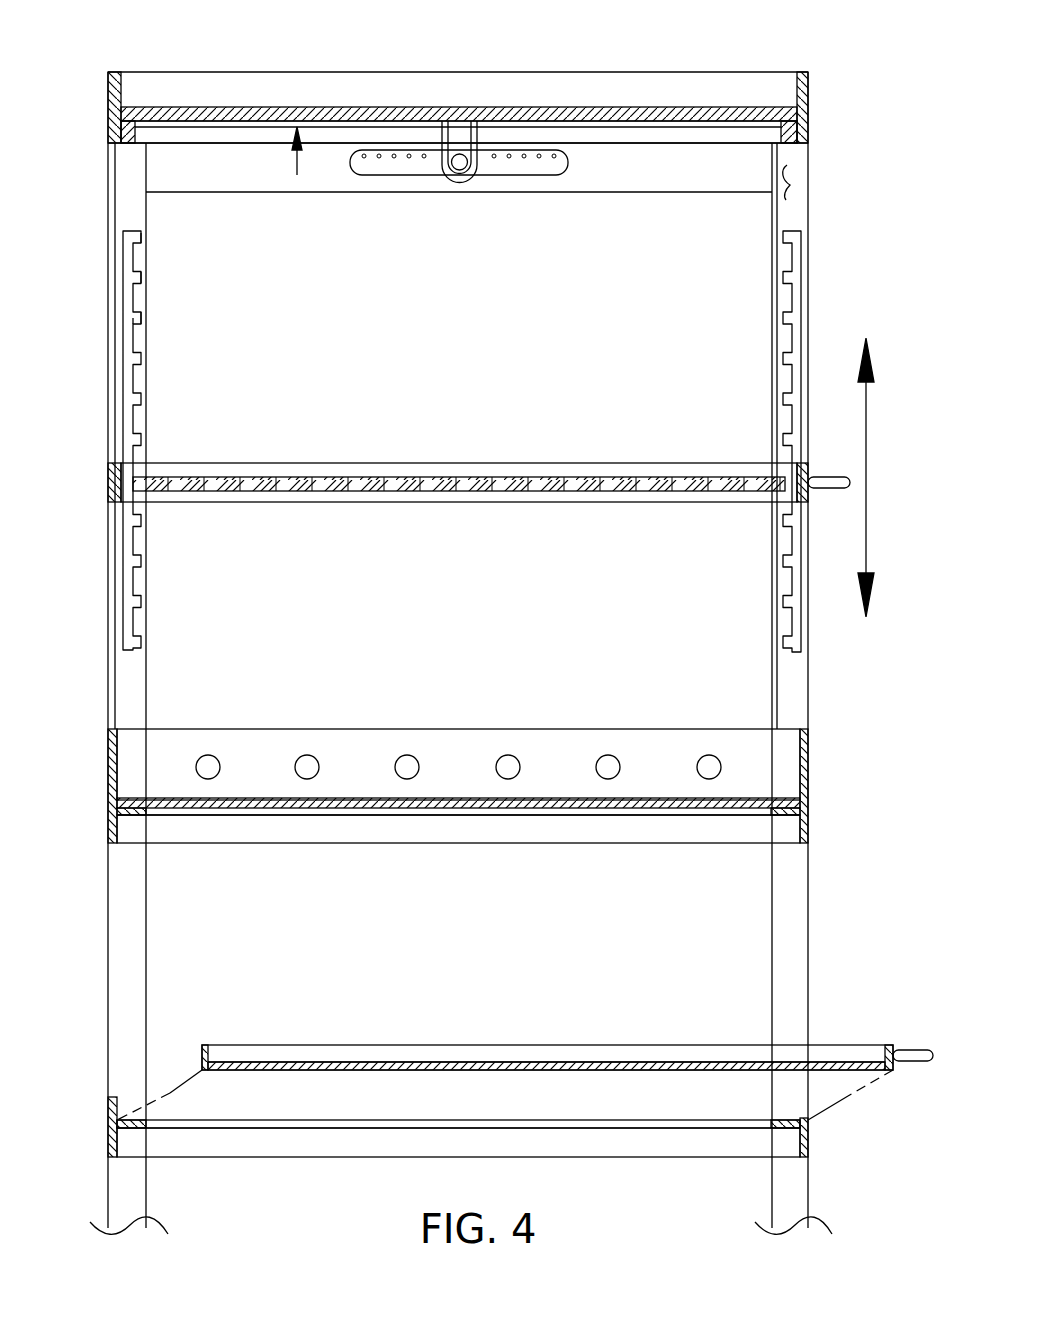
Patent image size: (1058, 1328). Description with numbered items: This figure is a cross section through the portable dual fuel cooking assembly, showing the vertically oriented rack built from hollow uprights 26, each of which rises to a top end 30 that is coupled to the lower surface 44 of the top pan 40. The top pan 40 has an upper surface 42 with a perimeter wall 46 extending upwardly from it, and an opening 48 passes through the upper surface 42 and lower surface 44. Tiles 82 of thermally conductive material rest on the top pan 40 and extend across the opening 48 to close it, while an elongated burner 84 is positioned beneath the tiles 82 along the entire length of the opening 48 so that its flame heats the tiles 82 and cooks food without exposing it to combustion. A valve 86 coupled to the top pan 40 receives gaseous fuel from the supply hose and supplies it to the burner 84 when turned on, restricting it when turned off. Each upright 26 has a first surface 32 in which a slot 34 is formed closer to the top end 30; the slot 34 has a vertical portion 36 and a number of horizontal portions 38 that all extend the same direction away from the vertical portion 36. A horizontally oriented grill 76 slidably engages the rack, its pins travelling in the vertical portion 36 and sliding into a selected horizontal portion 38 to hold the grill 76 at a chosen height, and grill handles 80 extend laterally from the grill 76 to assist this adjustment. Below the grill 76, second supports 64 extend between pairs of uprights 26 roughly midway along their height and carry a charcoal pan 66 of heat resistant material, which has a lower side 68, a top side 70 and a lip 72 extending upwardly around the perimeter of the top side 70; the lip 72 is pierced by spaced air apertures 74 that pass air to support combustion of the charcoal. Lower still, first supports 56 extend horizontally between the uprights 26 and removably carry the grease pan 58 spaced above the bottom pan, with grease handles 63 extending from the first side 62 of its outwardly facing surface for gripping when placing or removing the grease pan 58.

The upright 26 is at (805, 215).
The top end 30 is at (797, 110).
The first surface 32 is at (790, 182).
The slot 34 is at (125, 240).
The vertical portion 36 is at (125, 328).
The horizontal portions 38 is at (142, 238).
The top pan 40 is at (112, 100).
The upper surface 42 is at (140, 112).
The lower surface 44 is at (128, 140).
The perimeter wall 46 is at (805, 75).
The opening 48 is at (297, 176).
The first supports 56 is at (122, 1130).
The grease pan 58 is at (848, 1052).
The first side 62 is at (885, 1068).
The grease handles 63 is at (920, 1062).
The second supports 64 is at (783, 820).
The charcoal pan 66 is at (808, 800).
The lower side 68 is at (322, 802).
The top side 70 is at (148, 800).
The lip 72 is at (615, 725).
The air apertures 74 is at (505, 755).
The grill 76 is at (722, 478).
The grill handles 80 is at (838, 483).
The tiles 82 is at (410, 105).
The burner 84 is at (510, 178).
The valve 86 is at (455, 185).